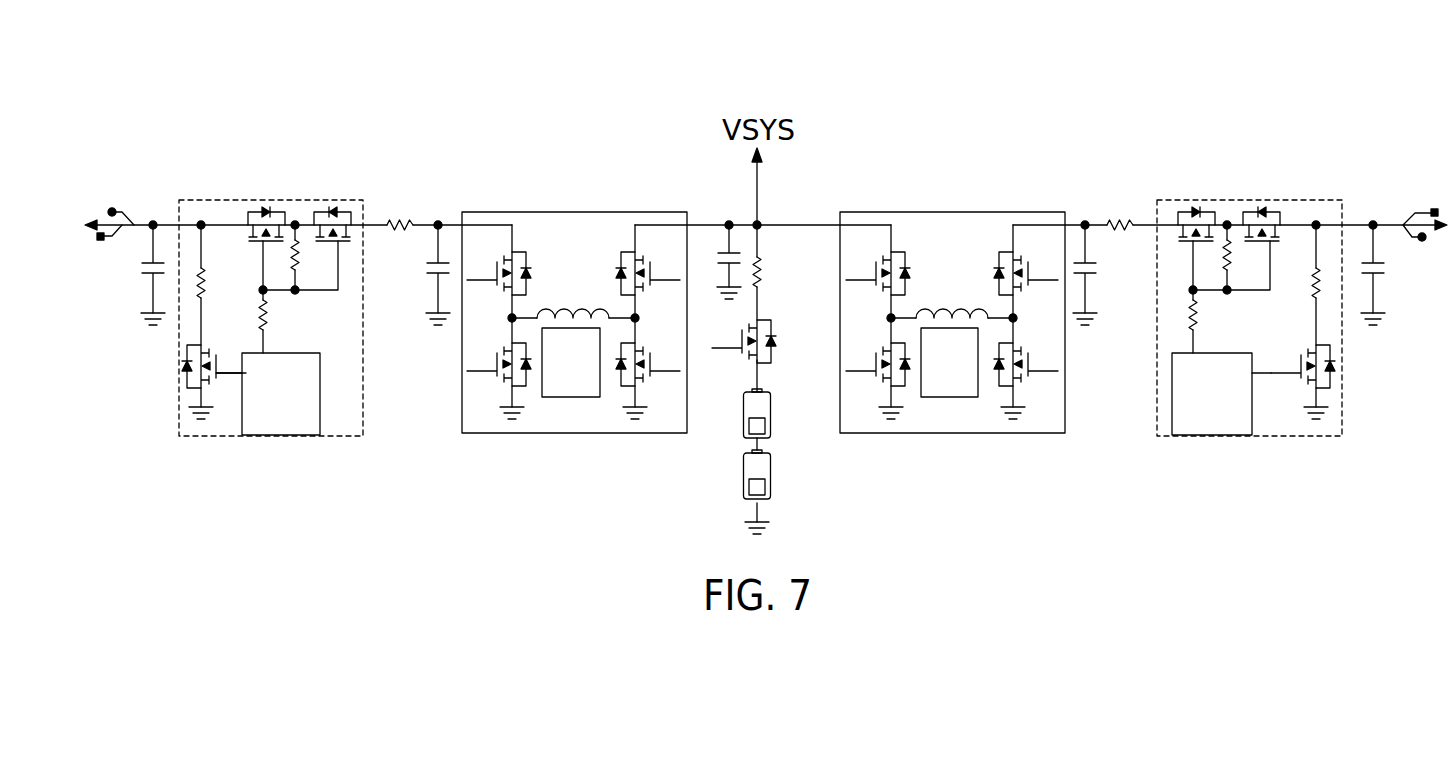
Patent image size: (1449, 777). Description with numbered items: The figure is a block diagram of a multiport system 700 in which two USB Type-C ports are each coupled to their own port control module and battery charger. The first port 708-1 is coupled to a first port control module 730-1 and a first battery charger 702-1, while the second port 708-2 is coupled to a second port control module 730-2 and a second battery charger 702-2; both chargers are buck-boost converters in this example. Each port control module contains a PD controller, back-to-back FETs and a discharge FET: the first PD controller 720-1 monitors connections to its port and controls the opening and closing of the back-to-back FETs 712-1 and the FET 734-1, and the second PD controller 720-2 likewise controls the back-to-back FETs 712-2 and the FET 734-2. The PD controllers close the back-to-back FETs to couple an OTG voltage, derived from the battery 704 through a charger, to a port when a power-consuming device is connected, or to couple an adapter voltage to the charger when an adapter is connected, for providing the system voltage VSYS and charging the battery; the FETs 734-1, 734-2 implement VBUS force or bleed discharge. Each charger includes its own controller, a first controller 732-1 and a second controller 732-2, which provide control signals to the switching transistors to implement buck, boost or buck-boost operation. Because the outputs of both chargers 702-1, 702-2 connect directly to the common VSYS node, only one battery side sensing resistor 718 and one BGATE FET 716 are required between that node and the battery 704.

The multiport system 700 is at (1256, 72).
The battery charger 702-1 is at (574, 312).
The battery charger 702-2 is at (952, 312).
The battery 704 is at (735, 448).
The port 708-1 is at (165, 149).
The port 708-2 is at (1366, 151).
The back-to-back FETs 712-1 is at (299, 209).
The back-to-back FETs 712-2 is at (1226, 210).
The BGATE FET 716 is at (777, 348).
The battery side sensing resistor 718 is at (765, 282).
The PD controller 720-1 is at (320, 378).
The PD controller 720-2 is at (1172, 400).
The port control module 730-1 is at (265, 319).
The port control module 730-2 is at (1255, 318).
The controller 732-1 is at (575, 398).
The controller 732-2 is at (957, 398).
The FET 734-1 is at (181, 370).
The FET 734-2 is at (1336, 365).